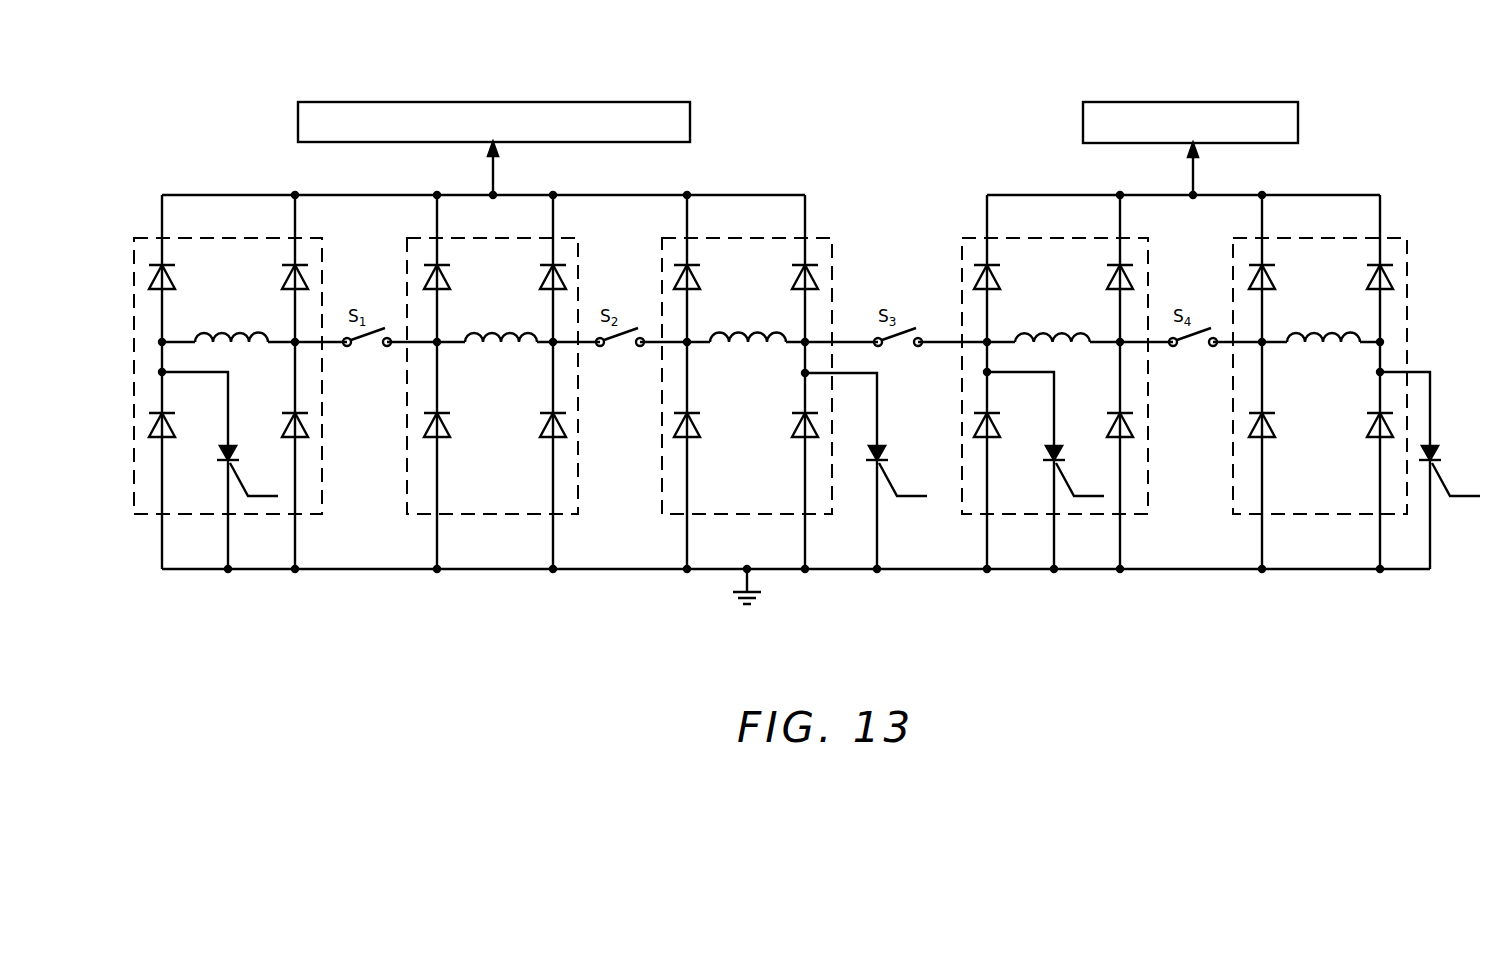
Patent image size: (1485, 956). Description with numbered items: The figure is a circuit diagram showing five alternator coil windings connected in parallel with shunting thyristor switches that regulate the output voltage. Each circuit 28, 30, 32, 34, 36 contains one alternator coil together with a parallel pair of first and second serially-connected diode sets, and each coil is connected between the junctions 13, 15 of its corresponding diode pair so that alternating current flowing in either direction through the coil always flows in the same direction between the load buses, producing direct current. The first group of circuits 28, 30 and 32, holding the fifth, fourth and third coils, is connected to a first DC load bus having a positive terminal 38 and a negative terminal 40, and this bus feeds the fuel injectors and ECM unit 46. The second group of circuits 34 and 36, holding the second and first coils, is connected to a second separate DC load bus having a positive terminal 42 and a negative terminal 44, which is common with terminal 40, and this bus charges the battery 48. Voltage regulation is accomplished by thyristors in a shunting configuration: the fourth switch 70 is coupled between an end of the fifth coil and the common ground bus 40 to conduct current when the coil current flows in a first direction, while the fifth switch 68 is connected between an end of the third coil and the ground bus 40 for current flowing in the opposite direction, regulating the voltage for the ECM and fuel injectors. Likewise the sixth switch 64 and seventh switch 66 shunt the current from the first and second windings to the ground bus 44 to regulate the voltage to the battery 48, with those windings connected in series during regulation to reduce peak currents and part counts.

The junction 13 is at (164, 341).
The junction 15 is at (293, 345).
The circuit 28 is at (228, 382).
The circuit 30 is at (510, 236).
The circuit 32 is at (797, 382).
The circuit 34 is at (1055, 382).
The circuit 36 is at (1356, 382).
The positive terminal 38 is at (756, 195).
The negative terminal 40 is at (628, 571).
The positive terminal 42 is at (1330, 195).
The negative terminal 44 is at (1228, 571).
The fuel injectors and ECM unit 46 is at (500, 100).
The battery 48 is at (1203, 100).
The sixth switch 64 is at (1436, 458).
The seventh switch 66 is at (1048, 466).
The fifth switch 68 is at (884, 456).
The fourth switch 70 is at (222, 466).